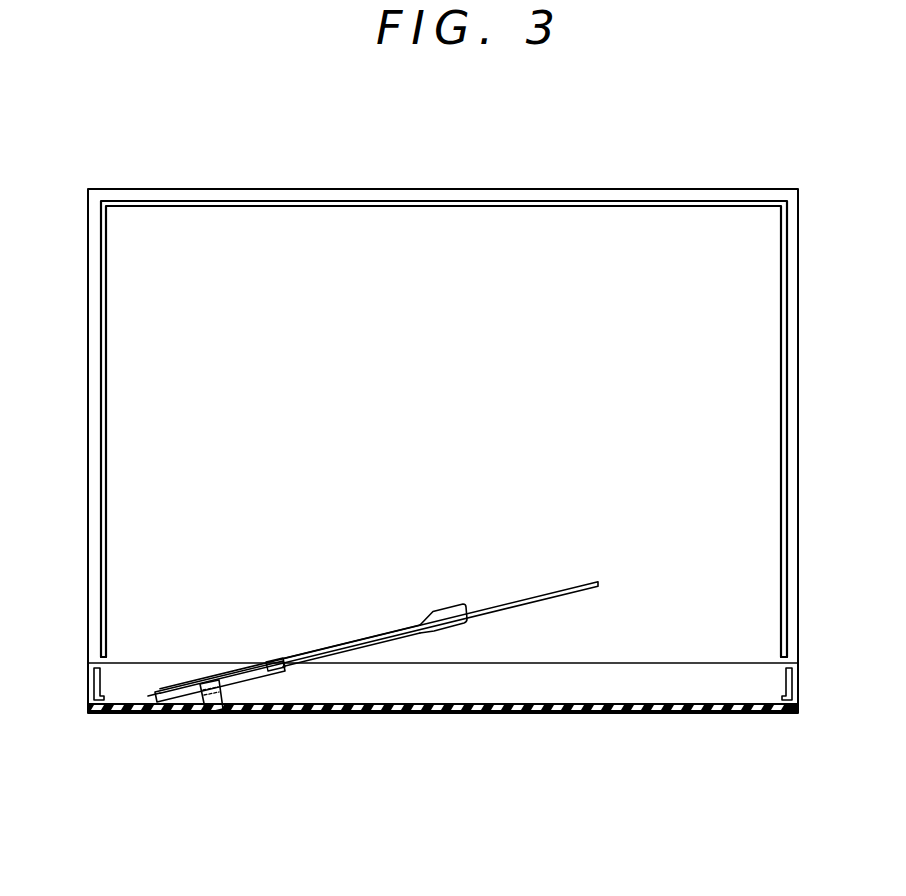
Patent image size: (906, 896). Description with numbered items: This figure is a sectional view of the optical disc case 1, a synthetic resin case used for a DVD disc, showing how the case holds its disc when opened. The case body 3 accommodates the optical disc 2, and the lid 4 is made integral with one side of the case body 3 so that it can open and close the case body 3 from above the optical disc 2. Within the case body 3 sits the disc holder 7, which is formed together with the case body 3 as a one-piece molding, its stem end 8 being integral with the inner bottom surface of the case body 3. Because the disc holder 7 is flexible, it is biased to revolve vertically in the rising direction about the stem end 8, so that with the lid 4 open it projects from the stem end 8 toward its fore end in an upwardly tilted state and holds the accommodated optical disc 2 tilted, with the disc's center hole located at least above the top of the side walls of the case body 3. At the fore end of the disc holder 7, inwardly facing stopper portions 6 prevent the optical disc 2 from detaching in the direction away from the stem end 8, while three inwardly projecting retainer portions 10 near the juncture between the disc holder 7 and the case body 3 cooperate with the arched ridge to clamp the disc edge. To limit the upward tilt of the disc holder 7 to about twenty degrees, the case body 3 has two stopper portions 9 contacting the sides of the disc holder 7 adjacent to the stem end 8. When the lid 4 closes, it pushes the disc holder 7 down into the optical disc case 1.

The optical disc case 1 is at (628, 158).
The optical disc 2 is at (542, 600).
The case body 3 is at (658, 714).
The lid 4 is at (203, 243).
The stopper portions 6 is at (449, 625).
The disc holder 7 is at (365, 655).
The stem end 8 is at (143, 684).
The stopper portions 9 is at (209, 702).
The retainer portions 10 is at (266, 673).